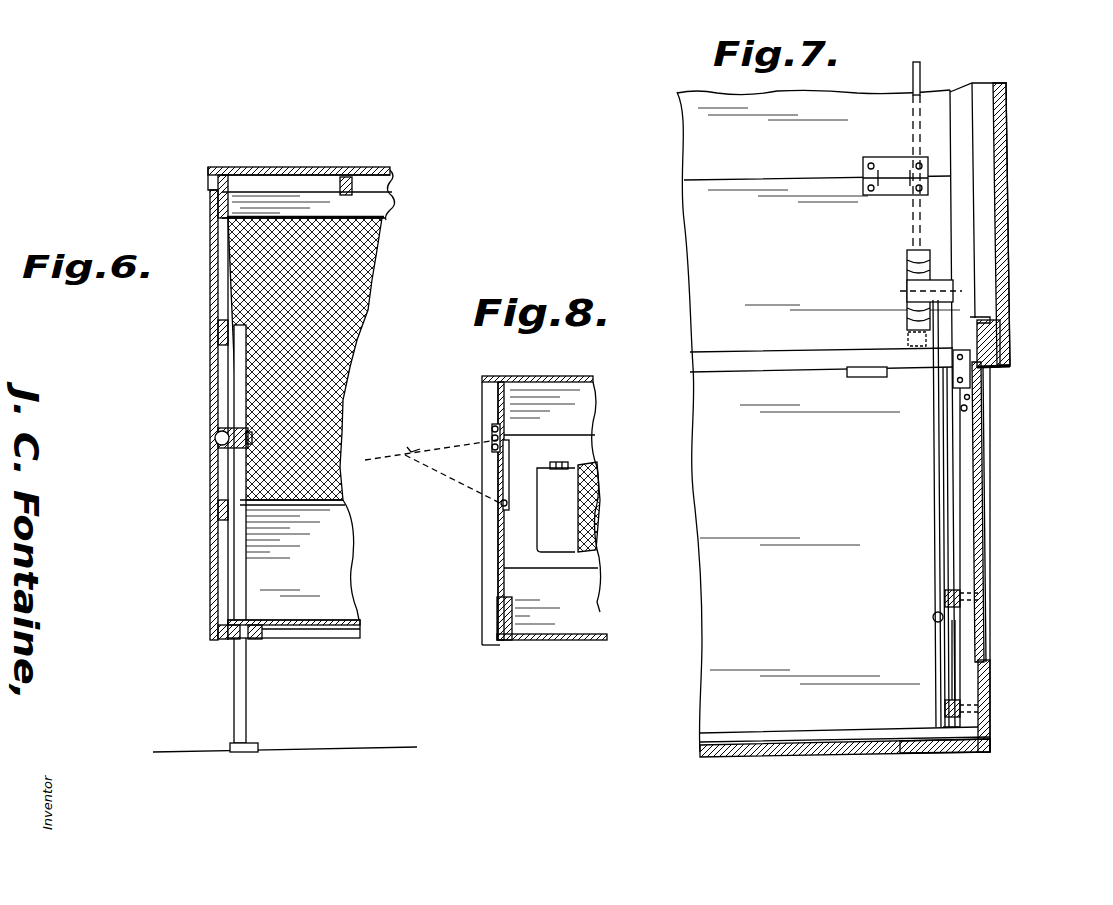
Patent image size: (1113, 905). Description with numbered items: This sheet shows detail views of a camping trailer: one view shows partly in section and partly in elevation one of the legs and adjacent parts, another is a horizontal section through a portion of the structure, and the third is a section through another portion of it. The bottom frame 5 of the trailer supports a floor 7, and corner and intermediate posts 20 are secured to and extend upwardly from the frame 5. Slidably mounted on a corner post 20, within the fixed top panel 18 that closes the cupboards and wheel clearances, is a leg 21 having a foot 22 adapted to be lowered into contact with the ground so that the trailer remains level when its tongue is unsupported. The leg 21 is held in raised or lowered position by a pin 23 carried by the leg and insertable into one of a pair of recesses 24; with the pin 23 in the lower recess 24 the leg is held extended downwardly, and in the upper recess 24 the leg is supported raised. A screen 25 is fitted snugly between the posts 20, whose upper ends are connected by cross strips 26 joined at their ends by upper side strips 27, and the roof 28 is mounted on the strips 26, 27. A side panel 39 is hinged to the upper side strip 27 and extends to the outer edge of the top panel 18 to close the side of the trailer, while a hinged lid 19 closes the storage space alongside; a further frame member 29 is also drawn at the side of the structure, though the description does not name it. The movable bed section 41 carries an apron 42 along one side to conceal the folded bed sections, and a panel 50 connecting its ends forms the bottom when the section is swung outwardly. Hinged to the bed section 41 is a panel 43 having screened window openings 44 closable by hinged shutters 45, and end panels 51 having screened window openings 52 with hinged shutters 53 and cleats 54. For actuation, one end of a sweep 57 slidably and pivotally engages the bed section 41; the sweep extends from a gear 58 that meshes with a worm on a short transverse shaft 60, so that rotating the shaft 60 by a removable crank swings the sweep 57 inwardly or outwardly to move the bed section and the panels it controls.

In FIG. 6, the bottom frame 5 is at (226, 640).
In FIG. 6, the floor 7 is at (333, 618).
In FIG. 6, the panel 18 is at (352, 508).
In FIG. 7, the panel 18 is at (693, 243).
In FIG. 7, the hinged lid 19 is at (690, 153).
In FIG. 6, the corner and intermediate posts 20 is at (218, 290).
In FIG. 7, the corner and intermediate posts 20 is at (1002, 357).
In FIG. 6, the leg 21 is at (234, 380).
In FIG. 7, the leg 21 is at (1002, 340).
In FIG. 6, the foot 22 is at (231, 747).
In FIG. 6, the pin 23 is at (214, 418).
In FIG. 6, the recess 24 is at (210, 346).
In FIG. 6, the screen 25 is at (366, 284).
In FIG. 6, the cross strip 26 is at (400, 178).
In FIG. 6, the upper side strip 27 is at (210, 200).
In FIG. 6, the roof 28 is at (300, 170).
In FIG. 7, the frame 29 is at (1008, 237).
In FIG. 8, the side panel 39 is at (580, 375).
In FIG. 7, the movable bed section 41 is at (965, 550).
In FIG. 8, the apron 42 is at (592, 586).
In FIG. 7, the apron 42 is at (790, 730).
In FIG. 7, the panel 43 is at (980, 754).
In FIG. 8, the screened window opening 44 is at (590, 460).
In FIG. 7, the screened window opening 44 is at (877, 756).
In FIG. 8, the hinged shutter 45 is at (550, 538).
In FIG. 7, the hinged shutter 45 is at (845, 744).
In FIG. 8, the panel 50 is at (586, 641).
In FIG. 7, the panel 50 is at (735, 644).
In FIG. 8, the end panel 51 is at (496, 414).
In FIG. 7, the end panel 51 is at (985, 430).
In FIG. 7, the screened window opening 52 is at (980, 483).
In FIG. 8, the hinged shutter 53 is at (520, 466).
In FIG. 7, the hinged shutter 53 is at (980, 482).
In FIG. 7, the cleat 54 is at (985, 398).
In FIG. 7, the sweep 57 is at (938, 509).
In FIG. 7, the gear 58 is at (907, 270).
In FIG. 7, the short transverse shaft 60 is at (921, 76).